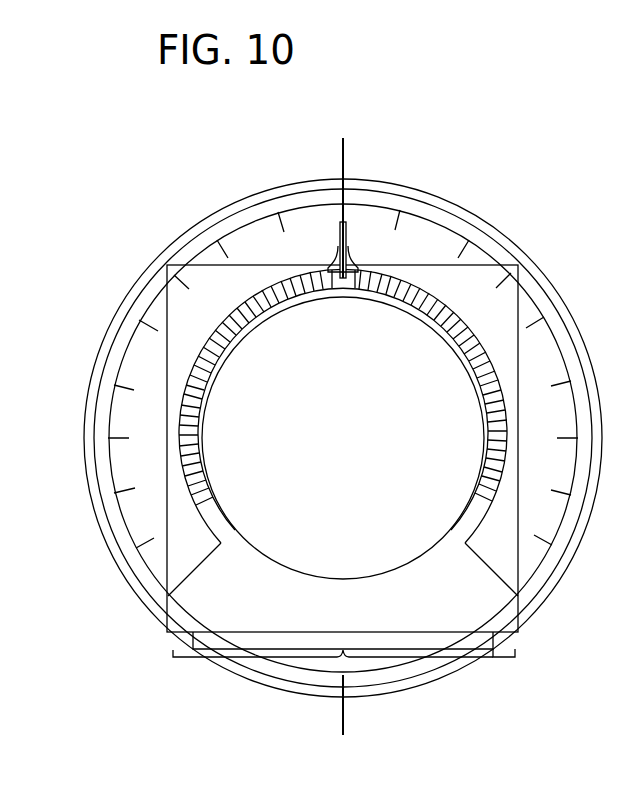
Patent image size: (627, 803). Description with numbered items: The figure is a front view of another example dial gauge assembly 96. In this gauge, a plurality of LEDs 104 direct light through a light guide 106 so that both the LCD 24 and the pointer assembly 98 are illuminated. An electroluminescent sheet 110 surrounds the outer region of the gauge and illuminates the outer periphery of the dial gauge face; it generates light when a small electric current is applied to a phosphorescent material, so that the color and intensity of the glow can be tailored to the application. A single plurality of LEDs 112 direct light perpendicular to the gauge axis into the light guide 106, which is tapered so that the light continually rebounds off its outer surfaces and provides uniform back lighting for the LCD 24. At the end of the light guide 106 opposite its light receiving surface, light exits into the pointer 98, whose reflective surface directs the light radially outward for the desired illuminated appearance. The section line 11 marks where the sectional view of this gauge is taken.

The section line 11- 11 is at (348, 721).
The LCD 24 is at (492, 262).
The dial gauge assembly 96 is at (343, 405).
The pointer assembly 98 is at (352, 240).
The LEDs 104 is at (487, 660).
The light guide 106 is at (524, 637).
The electroluminescent sheet 110 is at (250, 250).
The LEDs 112 is at (342, 667).